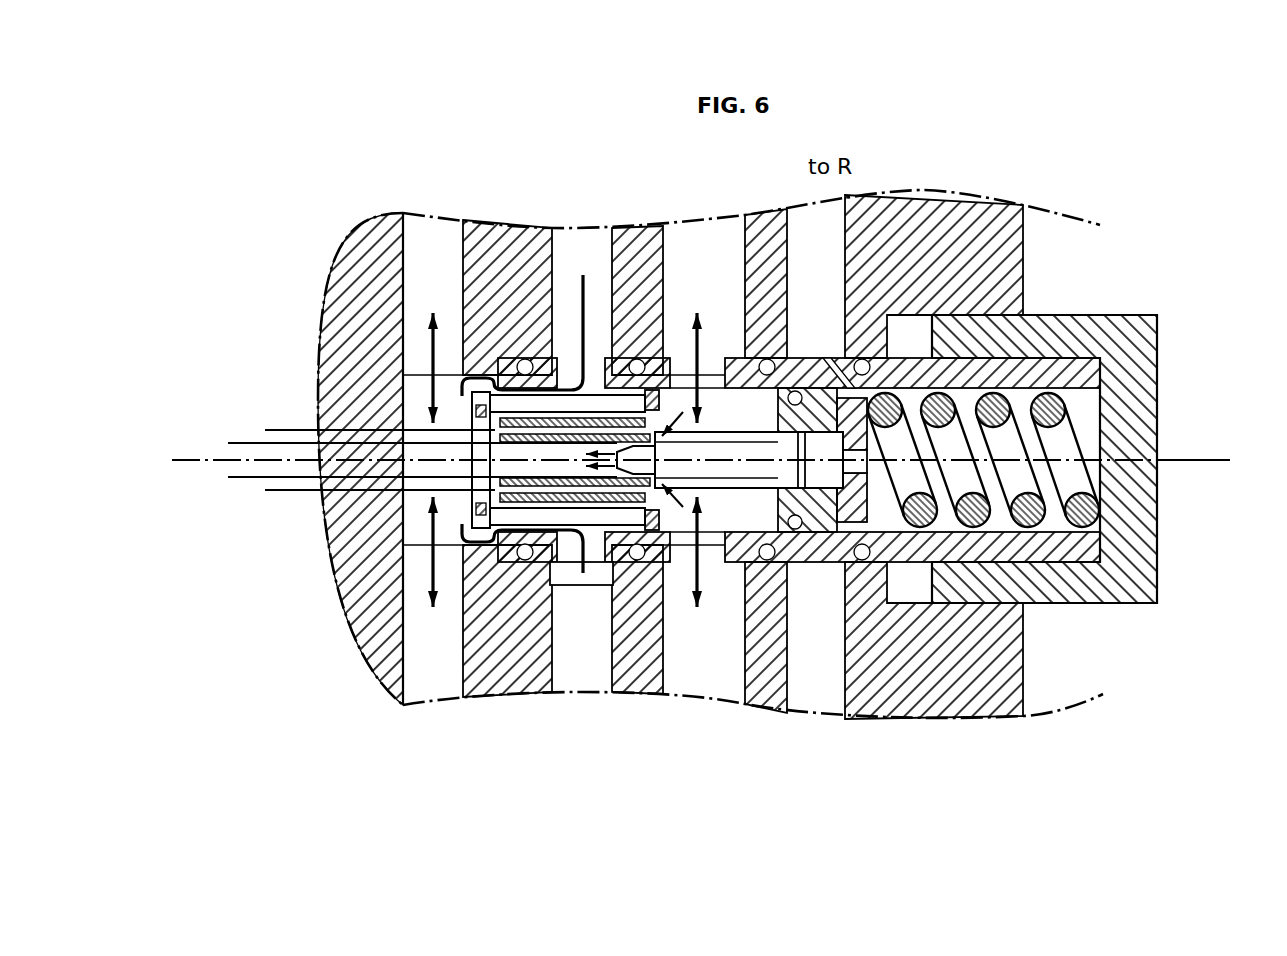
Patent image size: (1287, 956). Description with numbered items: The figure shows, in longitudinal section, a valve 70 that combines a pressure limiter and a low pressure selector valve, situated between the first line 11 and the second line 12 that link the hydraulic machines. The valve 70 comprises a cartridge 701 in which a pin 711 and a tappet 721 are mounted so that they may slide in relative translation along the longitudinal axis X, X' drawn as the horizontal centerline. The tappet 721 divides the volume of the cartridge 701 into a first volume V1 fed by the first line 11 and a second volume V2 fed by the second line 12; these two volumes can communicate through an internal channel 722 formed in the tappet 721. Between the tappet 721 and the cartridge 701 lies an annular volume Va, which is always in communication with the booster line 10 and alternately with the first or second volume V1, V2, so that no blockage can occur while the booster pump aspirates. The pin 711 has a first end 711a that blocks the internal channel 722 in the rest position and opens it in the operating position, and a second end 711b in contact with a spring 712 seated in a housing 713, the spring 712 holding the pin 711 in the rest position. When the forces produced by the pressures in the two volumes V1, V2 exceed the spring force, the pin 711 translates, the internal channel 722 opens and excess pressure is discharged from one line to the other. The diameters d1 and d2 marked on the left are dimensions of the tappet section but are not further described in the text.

The booster line 10 is at (583, 250).
The first line 11 is at (697, 240).
The second line 12 is at (433, 240).
The valve 70 is at (1192, 289).
The cartridge 701 is at (1072, 340).
The pin 711 is at (735, 467).
The first end 711a is at (645, 467).
The second end 711b is at (800, 467).
The spring 712 is at (1073, 482).
The housing 713 is at (1085, 410).
The tappet 721 is at (558, 493).
The internal channel 722 is at (523, 467).
The annular volume Va is at (535, 390).
The first volume V1 is at (415, 494).
The second volume V2 is at (680, 522).
The inner diameter d1 is at (238, 432).
The outer diameter d2 is at (275, 419).
The longitudinal axis X is at (696, 428).
The longitudinal axis X' is at (1204, 426).